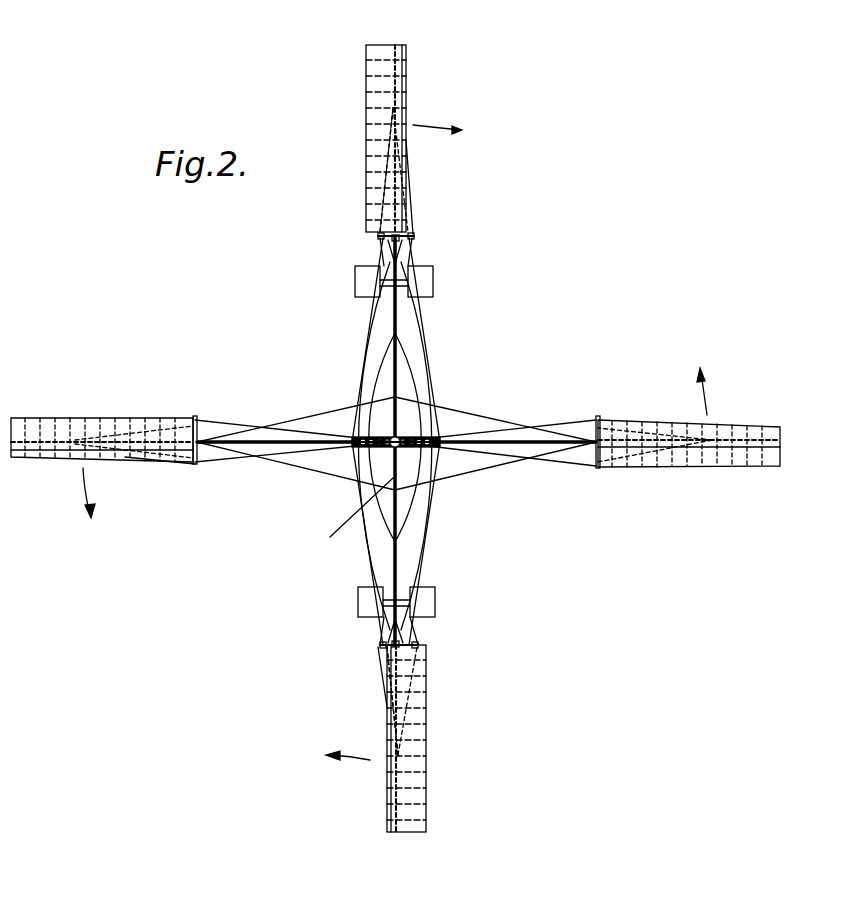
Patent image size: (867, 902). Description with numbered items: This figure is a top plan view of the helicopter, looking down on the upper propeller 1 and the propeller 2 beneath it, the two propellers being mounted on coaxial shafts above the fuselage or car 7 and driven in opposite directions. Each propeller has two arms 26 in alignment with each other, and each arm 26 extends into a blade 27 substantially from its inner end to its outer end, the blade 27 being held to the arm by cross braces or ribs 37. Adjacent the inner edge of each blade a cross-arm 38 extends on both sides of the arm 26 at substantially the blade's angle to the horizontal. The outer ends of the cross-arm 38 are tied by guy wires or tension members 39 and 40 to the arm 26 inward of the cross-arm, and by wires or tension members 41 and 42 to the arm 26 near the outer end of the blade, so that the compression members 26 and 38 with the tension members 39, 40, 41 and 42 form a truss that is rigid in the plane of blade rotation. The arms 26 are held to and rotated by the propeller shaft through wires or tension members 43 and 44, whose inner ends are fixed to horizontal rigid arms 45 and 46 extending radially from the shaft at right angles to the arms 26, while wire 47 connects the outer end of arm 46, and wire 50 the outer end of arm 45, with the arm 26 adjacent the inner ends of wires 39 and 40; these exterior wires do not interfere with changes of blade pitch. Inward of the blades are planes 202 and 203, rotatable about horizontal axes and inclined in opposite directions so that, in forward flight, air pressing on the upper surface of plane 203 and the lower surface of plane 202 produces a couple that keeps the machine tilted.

The upper propeller 1 is at (400, 138).
The propeller 2 is at (689, 417).
The fuselage or car 7 is at (415, 533).
The arm 26 is at (400, 378).
The blade 27 is at (395, 438).
The cross braces or ribs 37 is at (388, 112).
The cross-arm 38 is at (414, 240).
The guy wire or tension member 39 is at (383, 250).
The guy wire or tension member 40 is at (412, 248).
The wire or tension member 41 is at (380, 205).
The wire or tension member 42 is at (412, 215).
The wire or tension member 43 is at (371, 340).
The wire or tension member 44 is at (432, 392).
The horizontal rigid arm 45 is at (357, 458).
The horizontal rigid arm 46 is at (358, 407).
The wire or tension member 47 is at (333, 430).
The wire or tension member 50 is at (355, 452).
The plane 202 is at (425, 605).
The plane 203 is at (425, 283).